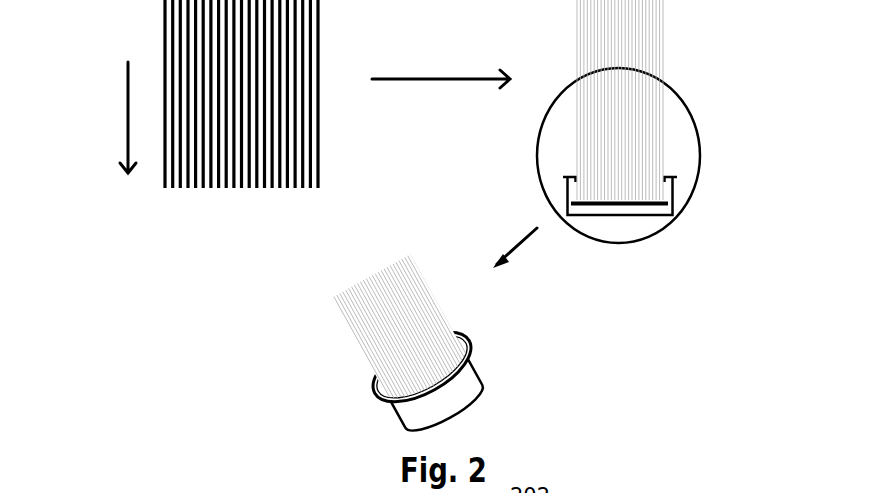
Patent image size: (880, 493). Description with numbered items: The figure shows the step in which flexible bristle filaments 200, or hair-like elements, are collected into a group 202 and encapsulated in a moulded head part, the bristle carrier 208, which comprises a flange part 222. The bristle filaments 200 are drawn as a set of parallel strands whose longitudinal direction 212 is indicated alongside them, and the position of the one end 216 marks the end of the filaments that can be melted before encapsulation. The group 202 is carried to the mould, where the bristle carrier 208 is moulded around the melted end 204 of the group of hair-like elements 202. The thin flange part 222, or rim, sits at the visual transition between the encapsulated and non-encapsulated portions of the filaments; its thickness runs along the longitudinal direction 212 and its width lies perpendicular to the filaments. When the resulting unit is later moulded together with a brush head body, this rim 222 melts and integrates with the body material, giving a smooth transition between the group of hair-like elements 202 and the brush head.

The flexible bristle filaments 200 is at (191, 139).
The group of bristle filaments 202 is at (697, 67).
The melted end 204 is at (606, 206).
The bristle carrier 208 is at (643, 215).
The longitudinal direction 212 is at (127, 103).
The position of the one end 216 is at (210, 190).
The flange part 222 is at (677, 177).